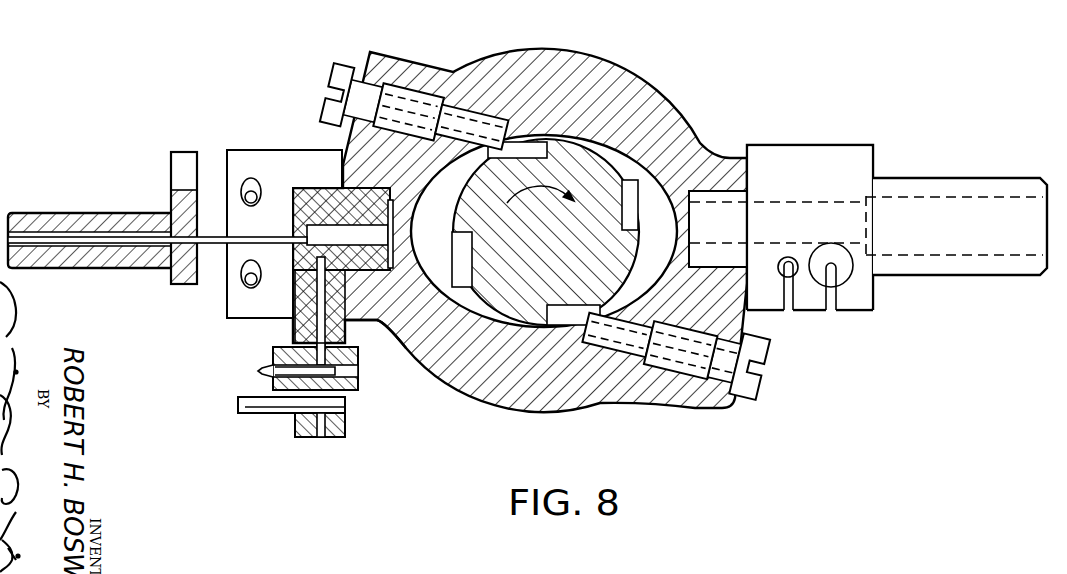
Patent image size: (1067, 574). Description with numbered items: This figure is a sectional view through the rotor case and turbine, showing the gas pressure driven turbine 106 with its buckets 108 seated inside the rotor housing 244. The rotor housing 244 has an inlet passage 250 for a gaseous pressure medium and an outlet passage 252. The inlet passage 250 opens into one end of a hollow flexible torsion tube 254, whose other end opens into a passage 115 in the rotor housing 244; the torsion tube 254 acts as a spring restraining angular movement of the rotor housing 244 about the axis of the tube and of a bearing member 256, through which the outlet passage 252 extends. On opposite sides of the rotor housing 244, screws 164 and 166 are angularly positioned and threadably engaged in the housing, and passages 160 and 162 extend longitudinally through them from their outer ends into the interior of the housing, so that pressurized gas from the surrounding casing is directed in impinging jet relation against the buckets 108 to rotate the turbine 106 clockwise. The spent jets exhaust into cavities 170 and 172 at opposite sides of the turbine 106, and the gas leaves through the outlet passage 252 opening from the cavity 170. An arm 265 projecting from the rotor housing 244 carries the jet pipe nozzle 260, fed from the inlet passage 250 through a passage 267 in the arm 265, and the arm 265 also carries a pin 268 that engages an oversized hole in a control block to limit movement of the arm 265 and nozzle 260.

The turbine 106 is at (562, 248).
The buckets 108 is at (524, 140).
The passage 115 is at (322, 228).
The passage 160 is at (412, 106).
The passage 162 is at (680, 357).
The screw 164 is at (372, 90).
The screw 166 is at (663, 360).
The cavity 170 is at (672, 232).
The cavity 172 is at (392, 327).
The rotor housing 244 is at (615, 75).
The inlet passage 250 is at (50, 240).
The outlet passage 252 is at (957, 195).
The torsion tube 254 is at (213, 252).
The bearing member 256 is at (947, 267).
The jet pipe nozzle 260 is at (258, 369).
The arm 265 is at (332, 366).
The passage 267 is at (316, 327).
The pin 268 is at (258, 408).